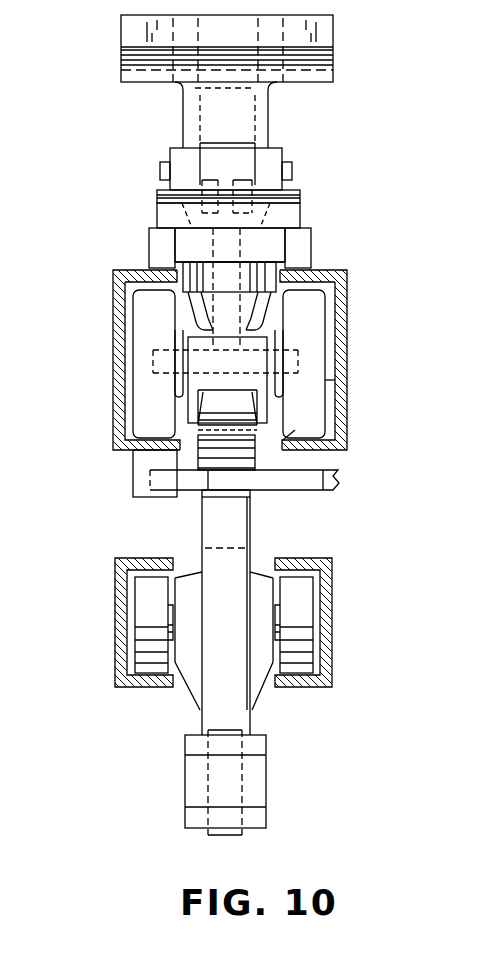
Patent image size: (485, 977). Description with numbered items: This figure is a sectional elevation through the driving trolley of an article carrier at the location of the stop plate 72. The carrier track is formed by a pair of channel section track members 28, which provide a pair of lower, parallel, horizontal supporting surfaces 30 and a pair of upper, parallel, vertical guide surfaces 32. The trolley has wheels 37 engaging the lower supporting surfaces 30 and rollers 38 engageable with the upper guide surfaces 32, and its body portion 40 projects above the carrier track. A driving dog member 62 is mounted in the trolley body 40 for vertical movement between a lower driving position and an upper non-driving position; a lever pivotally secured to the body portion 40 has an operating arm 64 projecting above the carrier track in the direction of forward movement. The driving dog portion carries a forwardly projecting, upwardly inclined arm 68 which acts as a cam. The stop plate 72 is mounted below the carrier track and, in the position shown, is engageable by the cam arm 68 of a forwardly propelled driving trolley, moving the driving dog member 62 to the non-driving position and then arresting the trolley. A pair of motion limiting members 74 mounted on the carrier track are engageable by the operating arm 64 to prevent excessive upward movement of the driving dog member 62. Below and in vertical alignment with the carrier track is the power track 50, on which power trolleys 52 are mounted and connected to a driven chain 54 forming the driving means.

The channel section track members 28 is at (348, 338).
The lower supporting surfaces 30 is at (327, 440).
The upper guide surfaces 32 is at (178, 264).
The wheels 37 is at (335, 381).
The rollers 38 is at (280, 268).
The body portion 40 is at (268, 125).
The power track 50 is at (333, 615).
The power trolleys 52 is at (255, 696).
The driven chain 54 is at (266, 775).
The driving dog member 62 is at (300, 222).
The operating arm 64 is at (300, 206).
The forwardly projecting, upwardly inclined arm 68 is at (215, 440).
The stop plate 72 is at (343, 480).
The motion limiting members 74 is at (311, 245).